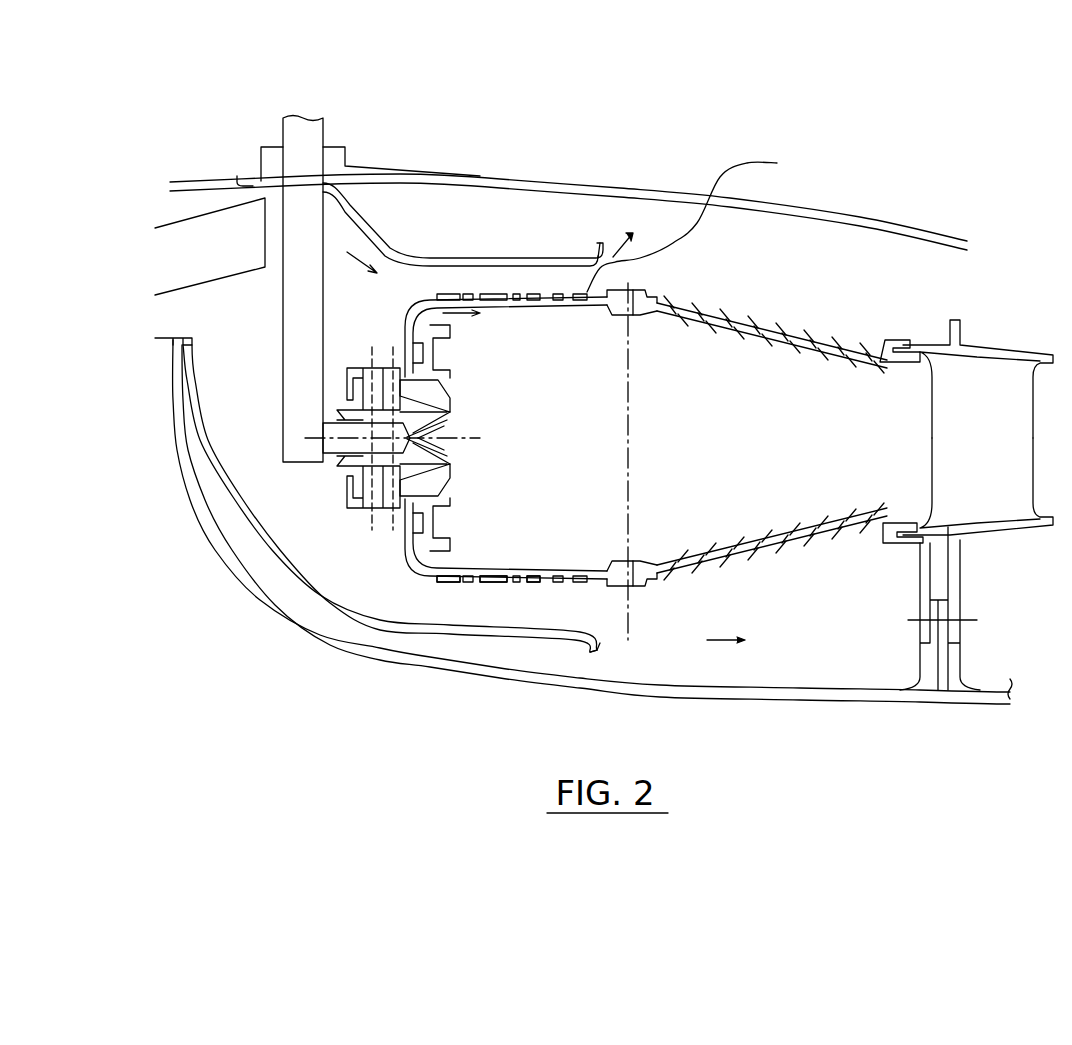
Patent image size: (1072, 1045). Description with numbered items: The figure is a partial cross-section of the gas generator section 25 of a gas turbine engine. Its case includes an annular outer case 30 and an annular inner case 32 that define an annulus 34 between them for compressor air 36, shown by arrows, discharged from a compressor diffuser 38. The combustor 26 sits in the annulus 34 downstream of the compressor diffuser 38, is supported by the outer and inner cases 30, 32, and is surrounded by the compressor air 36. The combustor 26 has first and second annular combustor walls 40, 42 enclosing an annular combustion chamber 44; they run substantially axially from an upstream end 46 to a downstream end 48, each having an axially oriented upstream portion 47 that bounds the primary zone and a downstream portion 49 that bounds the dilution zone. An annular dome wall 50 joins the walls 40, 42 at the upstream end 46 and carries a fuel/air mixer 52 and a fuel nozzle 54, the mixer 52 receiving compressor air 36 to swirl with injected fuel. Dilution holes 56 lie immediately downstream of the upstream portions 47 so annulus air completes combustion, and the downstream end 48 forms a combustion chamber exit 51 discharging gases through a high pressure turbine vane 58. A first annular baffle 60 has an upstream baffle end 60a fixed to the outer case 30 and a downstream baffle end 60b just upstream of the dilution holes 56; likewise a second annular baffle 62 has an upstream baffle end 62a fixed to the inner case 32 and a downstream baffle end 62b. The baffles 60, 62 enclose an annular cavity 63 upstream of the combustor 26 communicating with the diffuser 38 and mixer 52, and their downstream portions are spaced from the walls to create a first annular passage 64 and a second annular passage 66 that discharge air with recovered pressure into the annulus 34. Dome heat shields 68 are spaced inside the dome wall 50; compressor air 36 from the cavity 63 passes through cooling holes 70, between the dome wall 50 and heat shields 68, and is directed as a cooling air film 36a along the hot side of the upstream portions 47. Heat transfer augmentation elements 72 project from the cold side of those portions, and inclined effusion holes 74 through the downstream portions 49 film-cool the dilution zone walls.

The gas generator section 25 is at (607, 122).
The combustor 26 is at (753, 553).
The annular outer case 30 is at (707, 195).
The annular inner case 32 is at (400, 670).
The annulus 34 is at (819, 297).
The compressor air 36 is at (252, 398).
The cooling air film 36a is at (460, 305).
The compressor diffuser 38 is at (197, 232).
The first annular combustor wall 40 is at (700, 312).
The second annular combustor wall 42 is at (817, 537).
The annular combustion chamber 44 is at (584, 392).
The upstream end 46 is at (428, 556).
The upstream portion 47 is at (697, 218).
The downstream end 48 is at (900, 343).
The downstream portion 49 is at (763, 320).
The annular dome wall 50 is at (400, 330).
The combustion chamber exit 51 is at (913, 388).
The fuel/air mixer 52 is at (370, 367).
The fuel nozzle 54 is at (283, 290).
The dilution holes 56 is at (633, 317).
The high pressure turbine vane 58 is at (993, 473).
The first annular baffle 60 is at (440, 257).
The upstream baffle end 60a is at (235, 177).
The downstream baffle end 60b is at (605, 185).
The second annular baffle 62 is at (470, 640).
The upstream baffle end 62a is at (183, 352).
The downstream baffle end 62b is at (610, 633).
The annular cavity 63 is at (245, 345).
The first annular passage 64 is at (510, 283).
The second annular passage 66 is at (570, 618).
The dome heat shields 68 is at (400, 555).
The cooling holes 70 is at (403, 307).
The heat transfer augmentation elements 72 is at (515, 583).
The effusion holes 74 is at (723, 317).